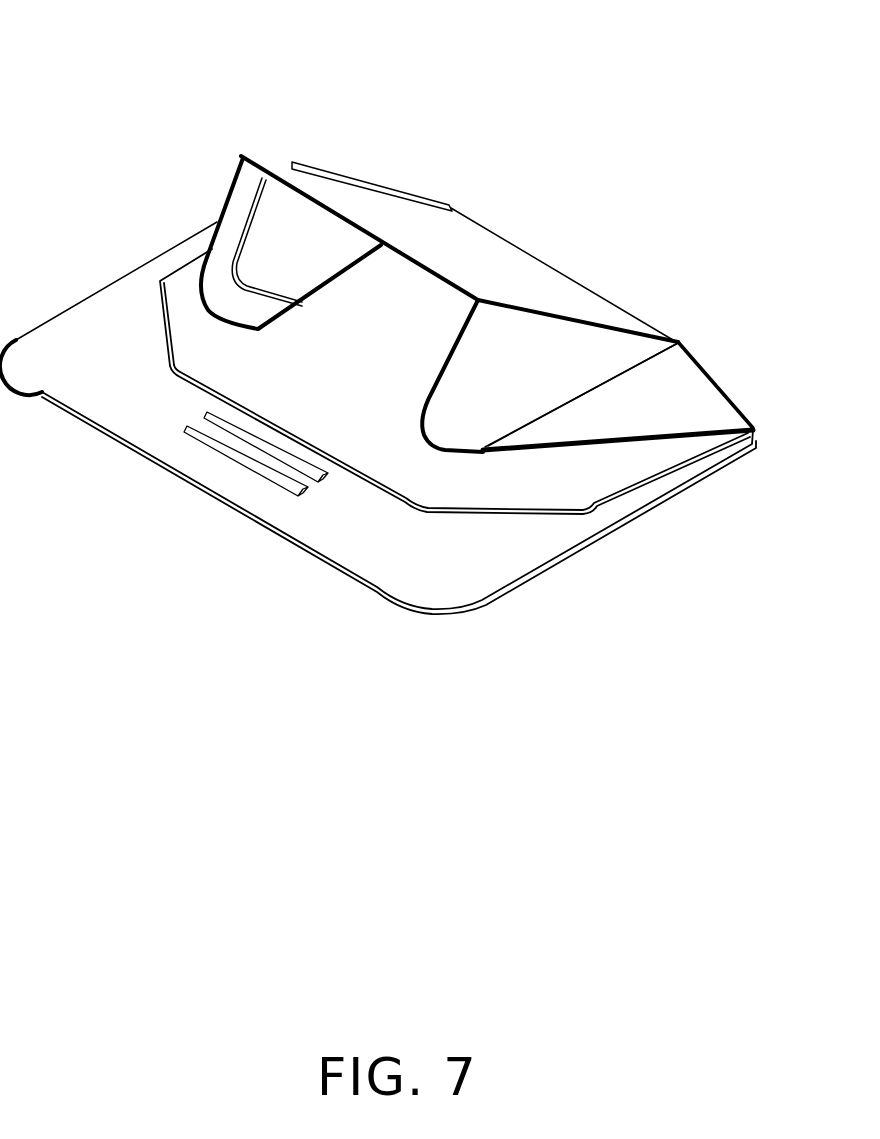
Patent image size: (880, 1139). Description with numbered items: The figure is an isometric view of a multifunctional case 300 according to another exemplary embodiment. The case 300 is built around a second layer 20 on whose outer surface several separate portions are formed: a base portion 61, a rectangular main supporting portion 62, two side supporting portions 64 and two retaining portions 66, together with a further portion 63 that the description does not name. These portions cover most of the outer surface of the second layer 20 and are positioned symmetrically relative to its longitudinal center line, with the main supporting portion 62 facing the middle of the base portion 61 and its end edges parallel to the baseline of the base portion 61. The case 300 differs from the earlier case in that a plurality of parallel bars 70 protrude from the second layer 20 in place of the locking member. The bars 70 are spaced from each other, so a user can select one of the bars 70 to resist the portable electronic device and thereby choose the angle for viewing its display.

The case 300 is at (147, 68).
The second layer 20 is at (350, 530).
The base portion 61 is at (540, 487).
The main supporting portion 62 is at (480, 268).
The left side flange 63 is at (280, 243).
The side supporting portion 64 is at (580, 350).
The retaining portion 66 is at (677, 385).
The parallel bars 70 is at (227, 450).